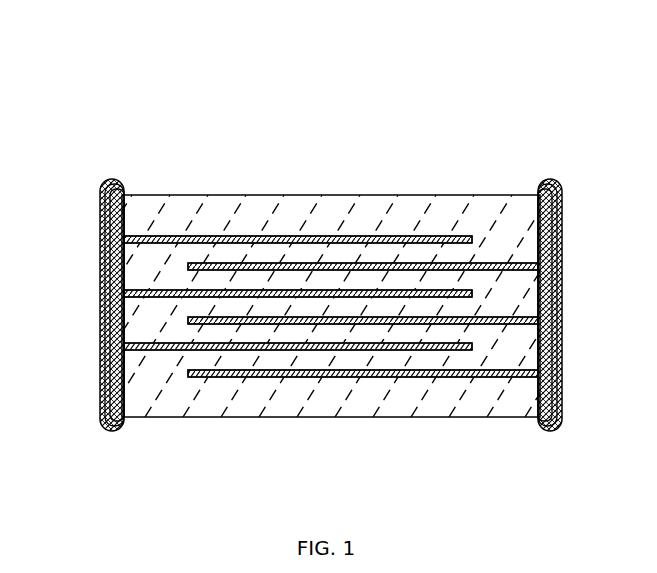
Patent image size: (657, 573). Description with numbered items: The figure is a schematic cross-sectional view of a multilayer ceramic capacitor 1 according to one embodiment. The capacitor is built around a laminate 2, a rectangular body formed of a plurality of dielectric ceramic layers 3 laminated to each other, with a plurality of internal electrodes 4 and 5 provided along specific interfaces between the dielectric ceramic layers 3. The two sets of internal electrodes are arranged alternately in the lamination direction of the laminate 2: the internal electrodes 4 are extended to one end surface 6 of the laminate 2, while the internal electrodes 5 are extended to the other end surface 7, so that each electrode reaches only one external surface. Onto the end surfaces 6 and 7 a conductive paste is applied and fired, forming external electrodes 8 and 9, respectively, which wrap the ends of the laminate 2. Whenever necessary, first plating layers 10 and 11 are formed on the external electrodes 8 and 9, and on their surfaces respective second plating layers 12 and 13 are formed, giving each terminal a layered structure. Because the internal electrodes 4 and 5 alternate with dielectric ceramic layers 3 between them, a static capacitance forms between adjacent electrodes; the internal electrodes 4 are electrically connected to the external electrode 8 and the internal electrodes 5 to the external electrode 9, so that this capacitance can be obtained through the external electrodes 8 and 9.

The multilayer ceramic capacitor 1 is at (141, 50).
The laminate 2 is at (285, 421).
The dielectric ceramic layers 3 is at (351, 280).
The internal electrodes 4 is at (249, 292).
The internal electrodes 5 is at (496, 320).
The end surface 6 is at (106, 274).
The end surface 7 is at (545, 290).
The external electrode 8 is at (106, 234).
The external electrode 9 is at (545, 221).
The first plating layer 10 is at (110, 346).
The first plating layer 11 is at (553, 333).
The second plating layer 12 is at (106, 383).
The second plating layer 13 is at (560, 380).